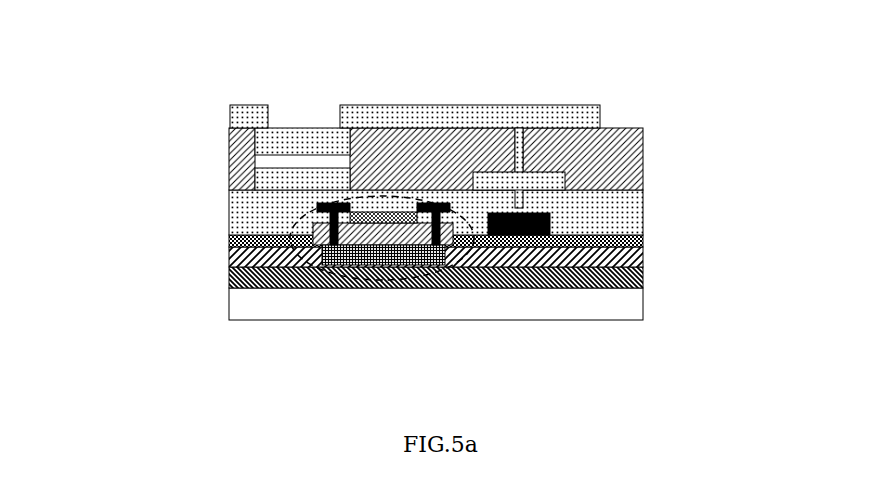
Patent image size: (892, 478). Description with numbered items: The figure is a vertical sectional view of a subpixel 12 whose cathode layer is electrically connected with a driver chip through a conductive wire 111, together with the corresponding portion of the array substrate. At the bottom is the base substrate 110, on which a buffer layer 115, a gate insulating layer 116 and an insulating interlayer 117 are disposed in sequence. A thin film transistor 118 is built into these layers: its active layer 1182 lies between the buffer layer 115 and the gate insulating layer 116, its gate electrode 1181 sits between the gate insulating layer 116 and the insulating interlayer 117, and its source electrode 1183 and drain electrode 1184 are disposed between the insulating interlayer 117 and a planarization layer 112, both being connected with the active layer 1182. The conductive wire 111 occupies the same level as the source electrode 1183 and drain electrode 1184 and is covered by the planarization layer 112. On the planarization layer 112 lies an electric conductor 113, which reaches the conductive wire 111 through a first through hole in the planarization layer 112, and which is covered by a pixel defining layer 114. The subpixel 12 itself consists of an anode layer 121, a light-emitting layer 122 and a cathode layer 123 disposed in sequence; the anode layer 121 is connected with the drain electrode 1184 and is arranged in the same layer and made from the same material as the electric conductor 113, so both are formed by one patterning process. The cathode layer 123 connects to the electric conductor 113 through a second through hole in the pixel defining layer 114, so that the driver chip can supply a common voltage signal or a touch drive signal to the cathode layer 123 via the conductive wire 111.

The subpixel 12 is at (152, 113).
The anode layer 121 is at (253, 180).
The light-emitting layer 122 is at (243, 155).
The cathode layer 123 is at (247, 118).
The electric conductor 113 is at (497, 180).
The pixel defining layer 114 is at (643, 150).
The planarization layer 112 is at (643, 203).
The conductive wire 111 is at (550, 224).
The insulating interlayer 117 is at (229, 243).
The gate insulating layer 116 is at (643, 256).
The buffer layer 115 is at (229, 278).
The base substrate 110 is at (643, 300).
The thin film transistor 118 is at (472, 250).
The gate electrode 1181 is at (380, 268).
The active layer 1182 is at (335, 265).
The source electrode 1183 is at (468, 250).
The drain electrode 1184 is at (310, 258).